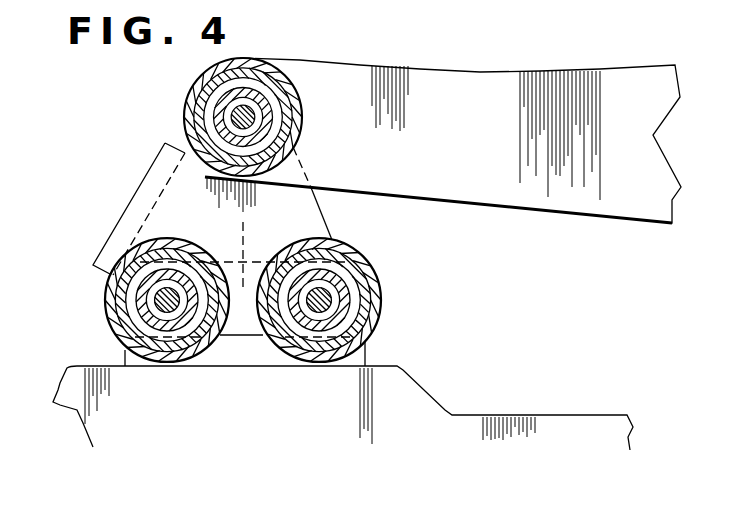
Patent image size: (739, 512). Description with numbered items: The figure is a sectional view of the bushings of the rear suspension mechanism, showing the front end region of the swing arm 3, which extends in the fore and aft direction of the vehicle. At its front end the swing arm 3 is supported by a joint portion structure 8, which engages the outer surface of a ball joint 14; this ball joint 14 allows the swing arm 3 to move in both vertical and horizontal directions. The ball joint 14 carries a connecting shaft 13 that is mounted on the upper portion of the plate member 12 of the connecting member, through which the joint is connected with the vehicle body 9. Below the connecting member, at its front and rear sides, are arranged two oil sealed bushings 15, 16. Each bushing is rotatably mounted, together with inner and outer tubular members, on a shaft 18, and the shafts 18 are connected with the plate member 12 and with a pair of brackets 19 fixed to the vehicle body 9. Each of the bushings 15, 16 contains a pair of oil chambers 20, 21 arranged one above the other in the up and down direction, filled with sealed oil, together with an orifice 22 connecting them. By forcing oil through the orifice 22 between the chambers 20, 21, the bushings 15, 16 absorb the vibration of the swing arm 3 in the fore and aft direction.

The swing arm 3 is at (531, 72).
The joint portion structure 8 is at (243, 95).
The vehicle body 9 is at (545, 415).
The plate member 12 is at (158, 183).
The connecting shaft 13 is at (257, 122).
The ball joint 14 is at (217, 104).
The oil sealed bushing 15 is at (121, 307).
The oil sealed bushing 16 is at (372, 283).
The shaft 18 is at (222, 277).
The bracket 19 is at (235, 355).
The oil chamber 20 is at (135, 257).
The oil chamber 21 is at (158, 352).
The orifice 22 is at (125, 337).